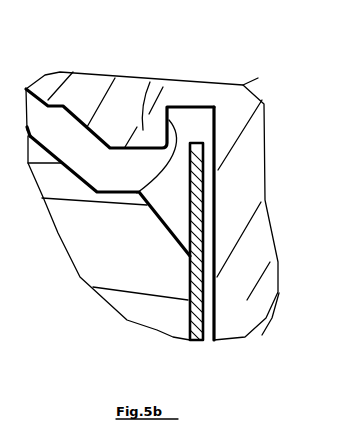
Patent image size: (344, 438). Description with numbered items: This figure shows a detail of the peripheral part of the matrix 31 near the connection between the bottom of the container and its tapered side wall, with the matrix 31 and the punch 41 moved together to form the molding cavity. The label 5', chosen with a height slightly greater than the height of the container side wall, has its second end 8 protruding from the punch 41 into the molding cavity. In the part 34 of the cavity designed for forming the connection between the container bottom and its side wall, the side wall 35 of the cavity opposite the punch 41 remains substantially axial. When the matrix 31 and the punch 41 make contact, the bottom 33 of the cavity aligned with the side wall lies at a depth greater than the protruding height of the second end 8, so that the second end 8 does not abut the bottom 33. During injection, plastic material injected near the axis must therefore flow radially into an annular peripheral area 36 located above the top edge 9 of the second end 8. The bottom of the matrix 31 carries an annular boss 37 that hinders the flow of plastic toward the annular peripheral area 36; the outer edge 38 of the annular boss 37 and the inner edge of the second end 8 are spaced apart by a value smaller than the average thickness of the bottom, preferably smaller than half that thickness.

The label 5' is at (152, 217).
The second end of the label 8 is at (204, 188).
The top edge of the second end 9 is at (216, 122).
The matrix 31 is at (135, 124).
The bottom of the cavity 33 is at (62, 105).
The part of the cavity designed for forming the connection between the bottom of the 34 is at (219, 74).
The side wall of the cavity 35 is at (216, 109).
The annular peripheral area 36 is at (193, 125).
The annular boss 37 is at (150, 82).
The outer edge of the annular boss 38 is at (148, 206).
The punch 41 is at (121, 251).